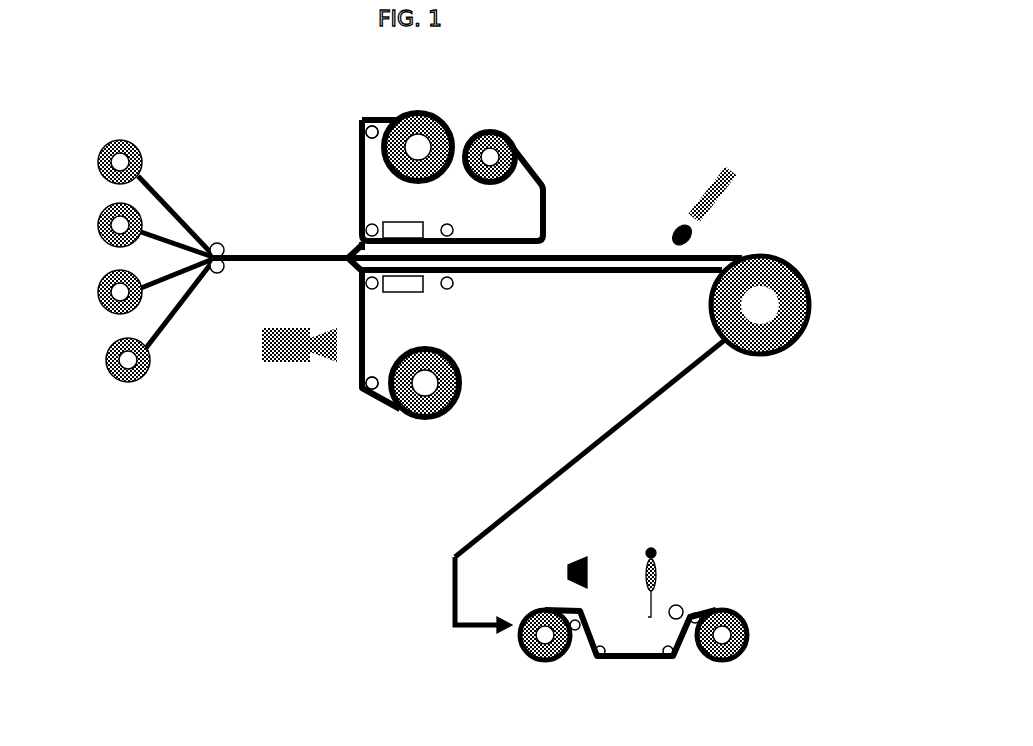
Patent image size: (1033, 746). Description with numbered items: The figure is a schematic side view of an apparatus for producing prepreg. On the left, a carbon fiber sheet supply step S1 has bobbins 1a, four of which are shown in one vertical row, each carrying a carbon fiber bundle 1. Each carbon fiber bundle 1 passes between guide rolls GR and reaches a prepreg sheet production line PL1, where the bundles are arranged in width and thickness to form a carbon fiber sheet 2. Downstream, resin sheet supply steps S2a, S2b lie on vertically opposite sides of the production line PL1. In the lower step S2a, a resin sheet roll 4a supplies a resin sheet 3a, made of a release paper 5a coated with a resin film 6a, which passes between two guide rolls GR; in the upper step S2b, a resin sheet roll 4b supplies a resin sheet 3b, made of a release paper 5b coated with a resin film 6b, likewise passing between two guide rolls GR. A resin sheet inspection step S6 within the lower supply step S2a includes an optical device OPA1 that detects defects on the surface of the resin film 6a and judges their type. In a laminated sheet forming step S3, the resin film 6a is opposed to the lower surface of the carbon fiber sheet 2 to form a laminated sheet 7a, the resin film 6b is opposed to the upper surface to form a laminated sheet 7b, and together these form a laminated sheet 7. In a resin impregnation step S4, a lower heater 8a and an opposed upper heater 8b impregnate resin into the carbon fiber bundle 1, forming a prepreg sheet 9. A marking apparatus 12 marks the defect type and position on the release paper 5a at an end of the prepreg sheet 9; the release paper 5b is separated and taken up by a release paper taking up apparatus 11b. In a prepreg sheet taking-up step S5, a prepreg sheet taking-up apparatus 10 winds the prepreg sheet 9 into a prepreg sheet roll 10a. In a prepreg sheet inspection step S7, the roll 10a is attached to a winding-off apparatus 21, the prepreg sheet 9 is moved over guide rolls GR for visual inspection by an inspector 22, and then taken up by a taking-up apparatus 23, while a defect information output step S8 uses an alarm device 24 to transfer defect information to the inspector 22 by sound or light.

The bobbin 1a is at (140, 140).
The carbon fiber bundle 1 is at (158, 193).
The guide roll GR is at (215, 243).
The carbon fiber sheet 2 is at (245, 265).
The carbon fiber sheet supply step S1 is at (272, 250).
The prepreg sheet production line PL1 is at (320, 250).
The laminated sheet forming step S3 is at (352, 262).
The laminated sheet 7 is at (357, 257).
The laminated sheet 7b is at (359, 250).
The laminated sheet 7a is at (360, 270).
The resin film 6b is at (360, 182).
The resin sheet supply step S2b is at (363, 160).
The resin sheet 3b is at (378, 122).
The resin sheet roll 4b is at (441, 117).
The release paper taking up apparatus 11b is at (500, 138).
The release paper 5b is at (367, 210).
The heater 8b is at (416, 225).
The resin film 6a is at (365, 356).
The resin sheet supply step S2a is at (363, 368).
The release paper 5a is at (365, 347).
The resin sheet inspection step S6 is at (362, 345).
The resin sheet 3a is at (380, 402).
The resin sheet roll 4a is at (440, 413).
The heater 8a is at (420, 288).
The optical device OPA1 is at (262, 355).
The prepreg sheet 9 is at (560, 270).
The resin impregnation step S4 is at (478, 262).
The prepreg sheet taking-up step S5 is at (720, 265).
The marking apparatus 12 is at (690, 200).
The prepreg sheet taking-up apparatus 10 is at (757, 313).
The prepreg sheet roll 10a is at (722, 320).
The winding-off apparatus 21 is at (523, 640).
The taking-up apparatus 23 is at (718, 612).
The prepreg sheet inspection step S7 is at (547, 610).
The alarm device 24 is at (567, 565).
The defect information output step S8 is at (588, 563).
The inspector 22 is at (660, 565).